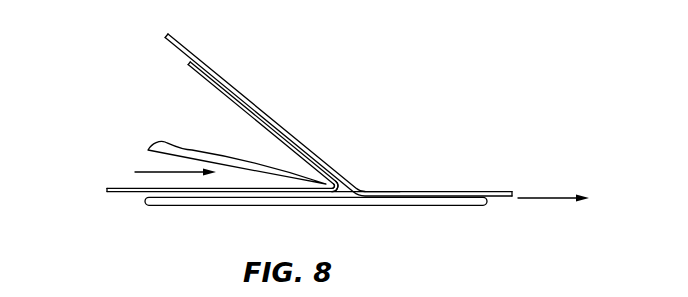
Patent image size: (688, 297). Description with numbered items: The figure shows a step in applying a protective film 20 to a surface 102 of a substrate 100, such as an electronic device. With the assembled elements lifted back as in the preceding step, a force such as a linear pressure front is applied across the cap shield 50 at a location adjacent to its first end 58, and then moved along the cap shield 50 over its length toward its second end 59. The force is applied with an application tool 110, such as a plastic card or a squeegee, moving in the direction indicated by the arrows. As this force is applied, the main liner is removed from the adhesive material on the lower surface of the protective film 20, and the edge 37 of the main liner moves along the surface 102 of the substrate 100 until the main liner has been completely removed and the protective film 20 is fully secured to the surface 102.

The protective film 20 is at (333, 193).
The edge of the main liner 37 is at (512, 191).
The cap shield 50 is at (164, 47).
The first end of the cap shield 58 is at (107, 192).
The second end of the cap shield 59 is at (163, 37).
The substrate 100 is at (484, 203).
The surface of the substrate 102 is at (382, 191).
The application tool 110 is at (166, 143).